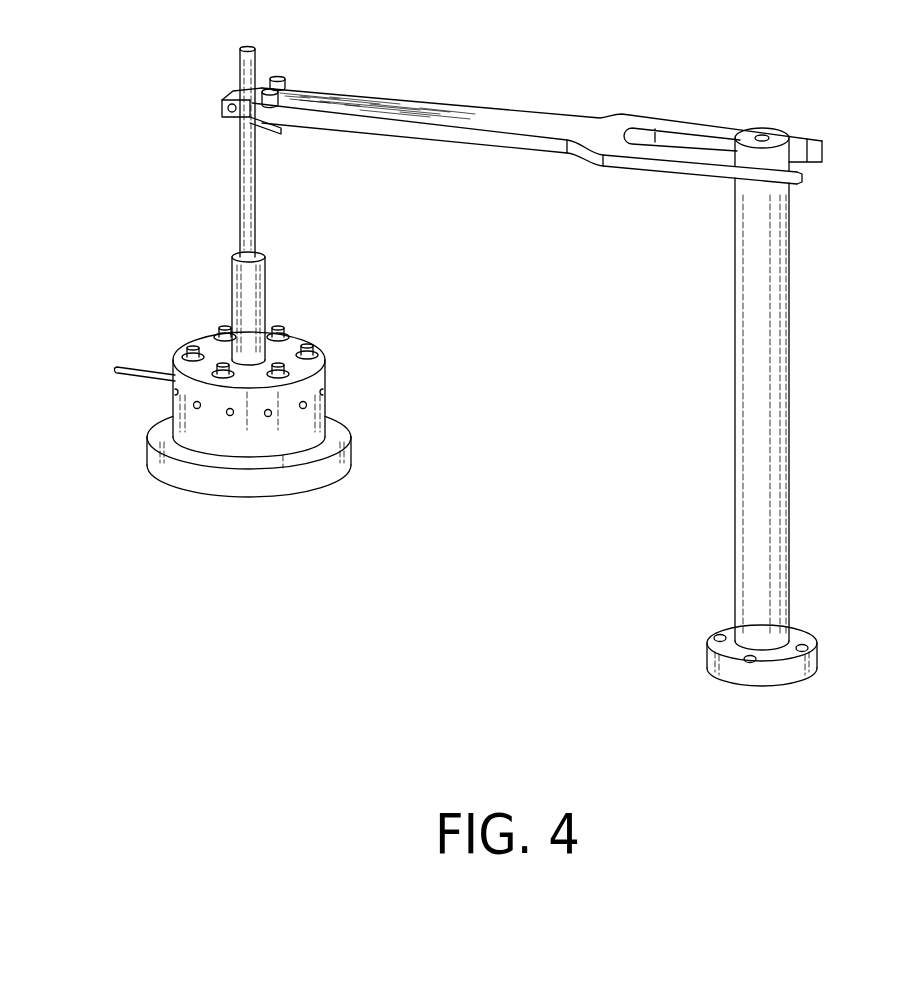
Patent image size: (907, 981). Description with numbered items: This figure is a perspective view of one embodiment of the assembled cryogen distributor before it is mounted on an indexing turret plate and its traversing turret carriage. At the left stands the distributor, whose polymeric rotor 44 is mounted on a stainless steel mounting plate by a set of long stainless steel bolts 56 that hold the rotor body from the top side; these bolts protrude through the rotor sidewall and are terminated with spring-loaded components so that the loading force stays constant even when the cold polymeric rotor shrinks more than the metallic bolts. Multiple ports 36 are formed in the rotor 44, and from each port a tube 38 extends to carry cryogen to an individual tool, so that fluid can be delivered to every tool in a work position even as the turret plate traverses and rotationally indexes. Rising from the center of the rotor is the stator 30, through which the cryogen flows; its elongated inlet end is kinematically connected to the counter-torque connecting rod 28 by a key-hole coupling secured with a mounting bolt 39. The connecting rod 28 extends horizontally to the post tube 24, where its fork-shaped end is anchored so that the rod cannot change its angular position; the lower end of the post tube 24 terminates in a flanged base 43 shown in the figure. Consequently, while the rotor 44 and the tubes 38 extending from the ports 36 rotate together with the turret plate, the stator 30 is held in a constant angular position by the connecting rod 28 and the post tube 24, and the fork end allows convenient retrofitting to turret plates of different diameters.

The post tube 24 is at (790, 437).
The connecting rod 28 is at (510, 122).
The stator 30 is at (257, 190).
The ports 36 is at (227, 414).
The tube 38 is at (131, 367).
The mounting bolt 39 is at (220, 102).
The base plate 43 is at (812, 650).
The rotor 44 is at (342, 428).
The bolts 56 is at (310, 347).